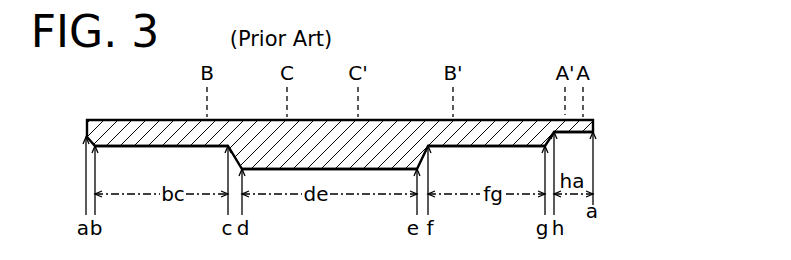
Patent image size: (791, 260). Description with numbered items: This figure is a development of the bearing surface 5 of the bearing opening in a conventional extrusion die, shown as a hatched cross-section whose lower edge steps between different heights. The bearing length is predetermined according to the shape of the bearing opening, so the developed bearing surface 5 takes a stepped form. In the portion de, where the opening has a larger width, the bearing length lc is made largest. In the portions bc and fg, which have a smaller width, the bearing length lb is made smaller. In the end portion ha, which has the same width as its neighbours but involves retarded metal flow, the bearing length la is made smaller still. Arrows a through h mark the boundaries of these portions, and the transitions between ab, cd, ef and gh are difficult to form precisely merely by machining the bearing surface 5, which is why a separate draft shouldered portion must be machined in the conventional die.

The bearing surface 5 is at (392, 143).
The bearing length la is at (573, 157).
The bearing length lb is at (176, 100).
The bearing length lc is at (288, 121).